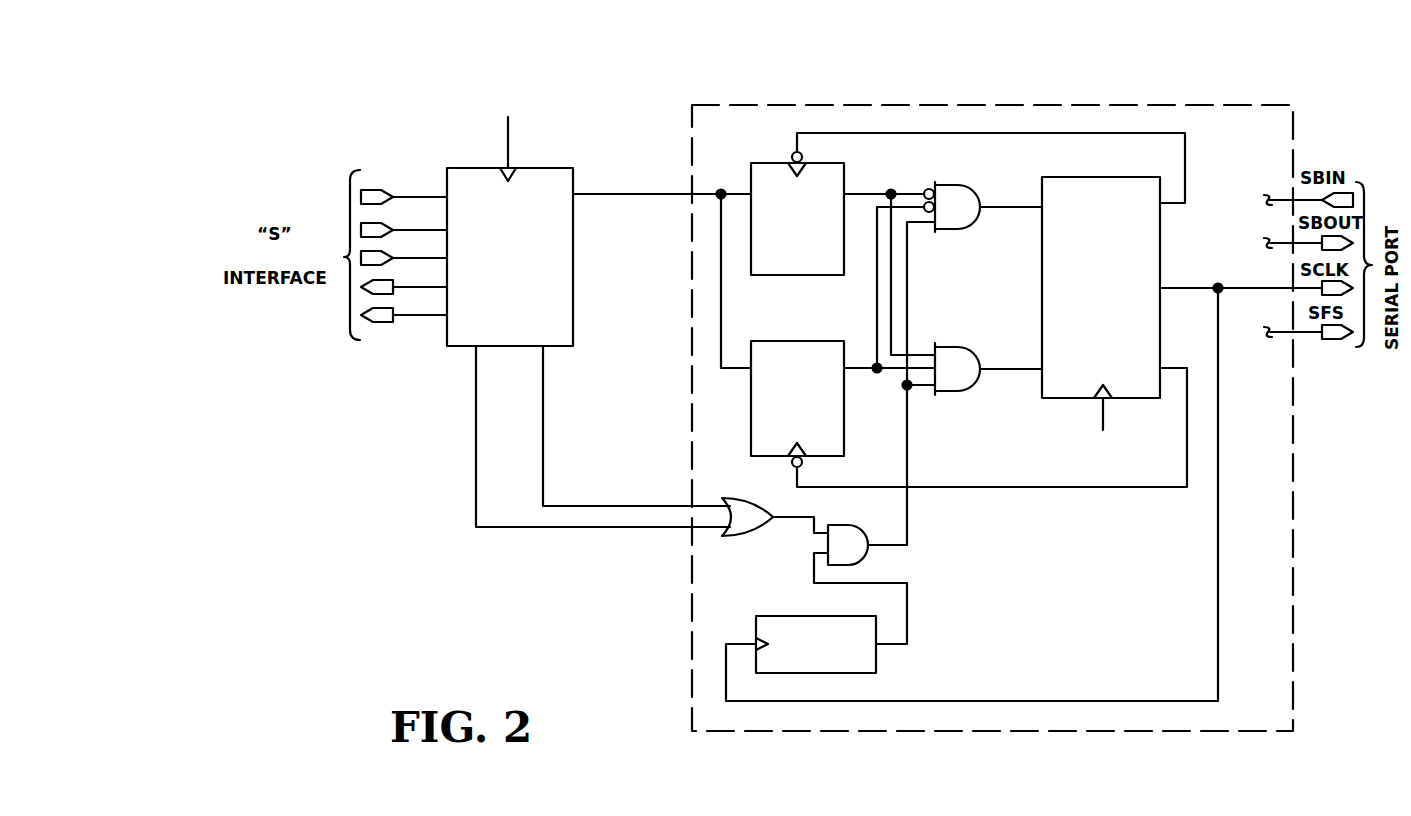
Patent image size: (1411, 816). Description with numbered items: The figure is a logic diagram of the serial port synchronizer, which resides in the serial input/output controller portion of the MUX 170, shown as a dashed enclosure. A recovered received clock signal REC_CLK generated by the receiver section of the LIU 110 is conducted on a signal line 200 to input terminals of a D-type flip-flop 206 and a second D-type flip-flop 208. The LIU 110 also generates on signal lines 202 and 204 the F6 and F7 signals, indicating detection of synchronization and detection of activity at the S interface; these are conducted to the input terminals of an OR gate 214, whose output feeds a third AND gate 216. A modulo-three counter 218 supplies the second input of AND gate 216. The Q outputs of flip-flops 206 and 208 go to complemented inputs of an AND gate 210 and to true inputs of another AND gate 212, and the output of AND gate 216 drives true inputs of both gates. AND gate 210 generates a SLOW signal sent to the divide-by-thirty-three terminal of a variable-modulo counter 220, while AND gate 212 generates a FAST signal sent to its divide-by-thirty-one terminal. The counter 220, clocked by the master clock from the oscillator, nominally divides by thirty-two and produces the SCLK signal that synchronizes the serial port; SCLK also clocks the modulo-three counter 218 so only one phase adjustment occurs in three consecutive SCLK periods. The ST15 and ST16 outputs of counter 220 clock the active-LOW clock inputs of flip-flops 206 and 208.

The LIU 110 is at (513, 304).
The MUX 170 is at (1010, 105).
The signal line 200 is at (617, 195).
The signal line 202 is at (543, 422).
The signal line 204 is at (476, 455).
The D-type flip-flop 206 is at (844, 180).
The second D-type flip-flop 208 is at (800, 341).
The AND gate 210 is at (955, 229).
The AND gate 212 is at (958, 391).
The OR gate 214 is at (730, 536).
The third AND gate 216 is at (850, 507).
The modulo-three counter 218 is at (876, 658).
The variable-modulo counter 220 is at (1100, 177).